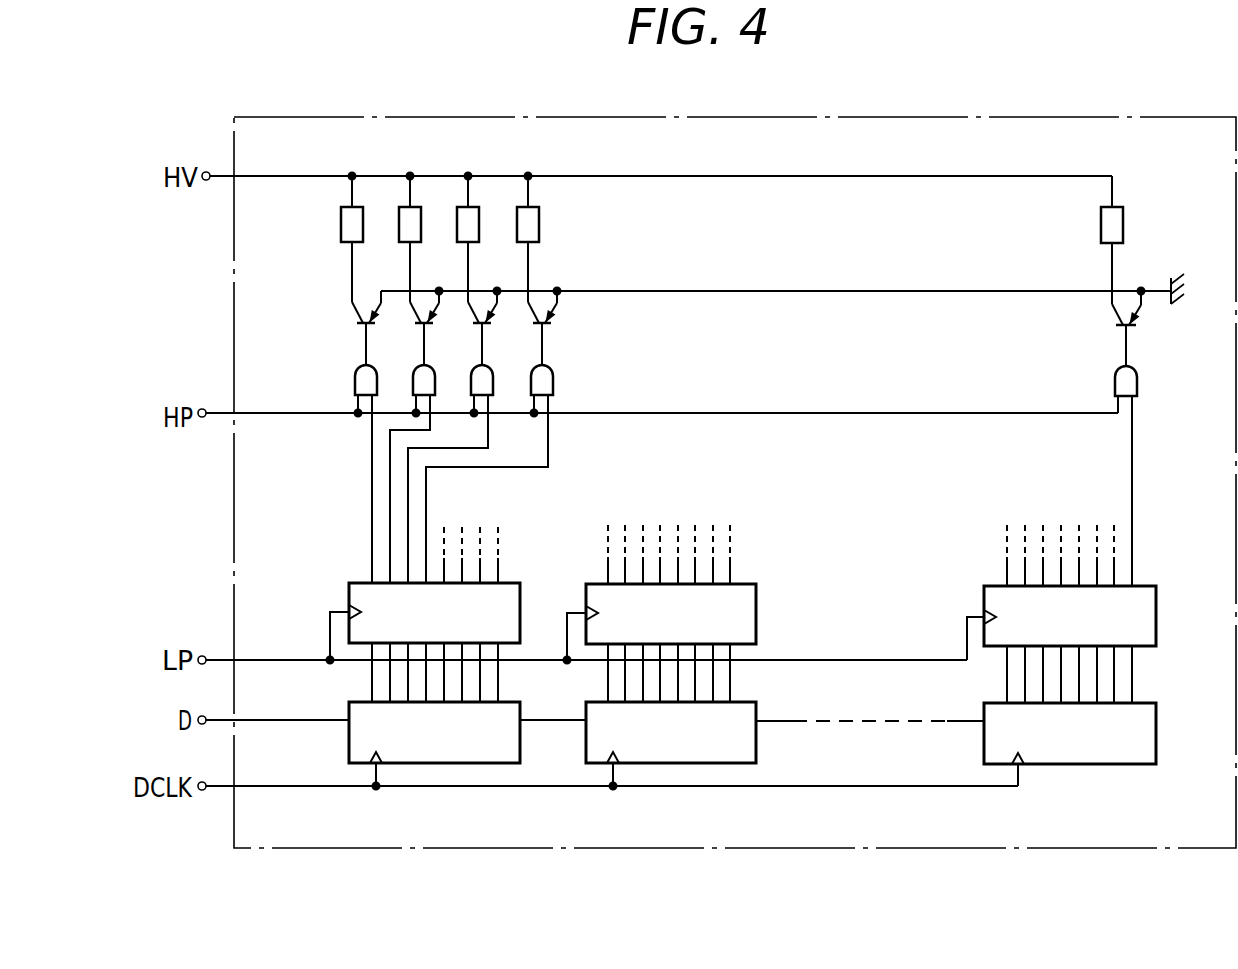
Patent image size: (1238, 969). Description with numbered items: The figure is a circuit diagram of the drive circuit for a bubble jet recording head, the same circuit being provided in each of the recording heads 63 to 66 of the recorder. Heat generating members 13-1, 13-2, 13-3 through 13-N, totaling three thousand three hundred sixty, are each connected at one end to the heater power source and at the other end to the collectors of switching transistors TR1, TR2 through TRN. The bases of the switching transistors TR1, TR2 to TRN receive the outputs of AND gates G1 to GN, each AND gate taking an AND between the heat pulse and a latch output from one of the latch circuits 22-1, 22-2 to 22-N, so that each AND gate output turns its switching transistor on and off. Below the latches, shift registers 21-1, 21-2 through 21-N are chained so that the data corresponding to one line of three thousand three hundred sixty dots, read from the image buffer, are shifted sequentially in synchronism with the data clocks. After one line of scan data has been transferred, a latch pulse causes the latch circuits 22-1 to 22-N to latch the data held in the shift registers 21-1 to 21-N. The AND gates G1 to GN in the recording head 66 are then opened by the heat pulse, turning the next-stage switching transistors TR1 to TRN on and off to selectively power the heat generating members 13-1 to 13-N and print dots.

The heat generating member 13-1 is at (340, 222).
The heat generating member 13-2 is at (398, 221).
The heat generating member 13-3 is at (457, 222).
The heat generating member 13-N is at (1123, 229).
The switching transistor TR1 is at (356, 323).
The switching transistor TR2 is at (414, 318).
The switching transistor TRN is at (1115, 325).
The AND gate G1 is at (355, 385).
The AND gate GN is at (1138, 385).
The latch circuit 22-1 is at (349, 590).
The latch circuit 22-2 is at (586, 590).
The latch circuit 22-N is at (984, 598).
The shift register 21-1 is at (349, 748).
The shift register 21-2 is at (756, 745).
The shift register 21-N is at (984, 745).
The recording head 63 is at (735, 462).
The recording head 66 is at (1108, 105).